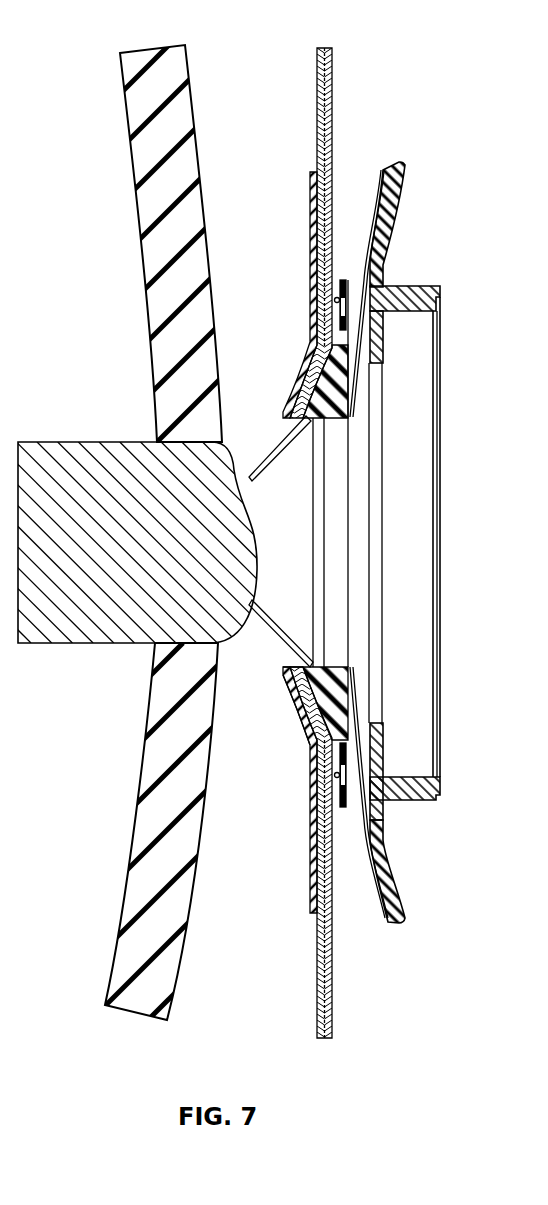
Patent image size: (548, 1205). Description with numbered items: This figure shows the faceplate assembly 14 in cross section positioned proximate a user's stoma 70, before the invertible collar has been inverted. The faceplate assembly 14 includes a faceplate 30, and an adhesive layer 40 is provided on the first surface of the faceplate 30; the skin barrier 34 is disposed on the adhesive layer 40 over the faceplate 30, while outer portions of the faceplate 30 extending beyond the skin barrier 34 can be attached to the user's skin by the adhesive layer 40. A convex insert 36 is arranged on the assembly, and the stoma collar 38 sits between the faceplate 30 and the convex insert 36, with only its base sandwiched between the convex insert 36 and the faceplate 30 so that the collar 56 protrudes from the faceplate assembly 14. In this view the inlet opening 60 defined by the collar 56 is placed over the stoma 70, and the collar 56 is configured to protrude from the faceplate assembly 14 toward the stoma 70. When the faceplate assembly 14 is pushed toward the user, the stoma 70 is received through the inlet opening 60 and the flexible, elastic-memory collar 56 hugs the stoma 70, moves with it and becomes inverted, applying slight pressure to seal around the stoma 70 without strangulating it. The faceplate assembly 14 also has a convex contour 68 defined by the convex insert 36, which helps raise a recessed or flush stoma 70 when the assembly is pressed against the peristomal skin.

The faceplate assembly 14 is at (360, 543).
The faceplate 30 is at (320, 543).
The skin barrier 34 is at (312, 870).
The convex insert 36 is at (335, 680).
The stoma collar 38 is at (270, 447).
The adhesive layer 40 is at (318, 972).
The collar 56 is at (283, 647).
The inlet opening 60 is at (244, 487).
The convex contour 68 is at (292, 708).
The stoma 70 is at (228, 524).